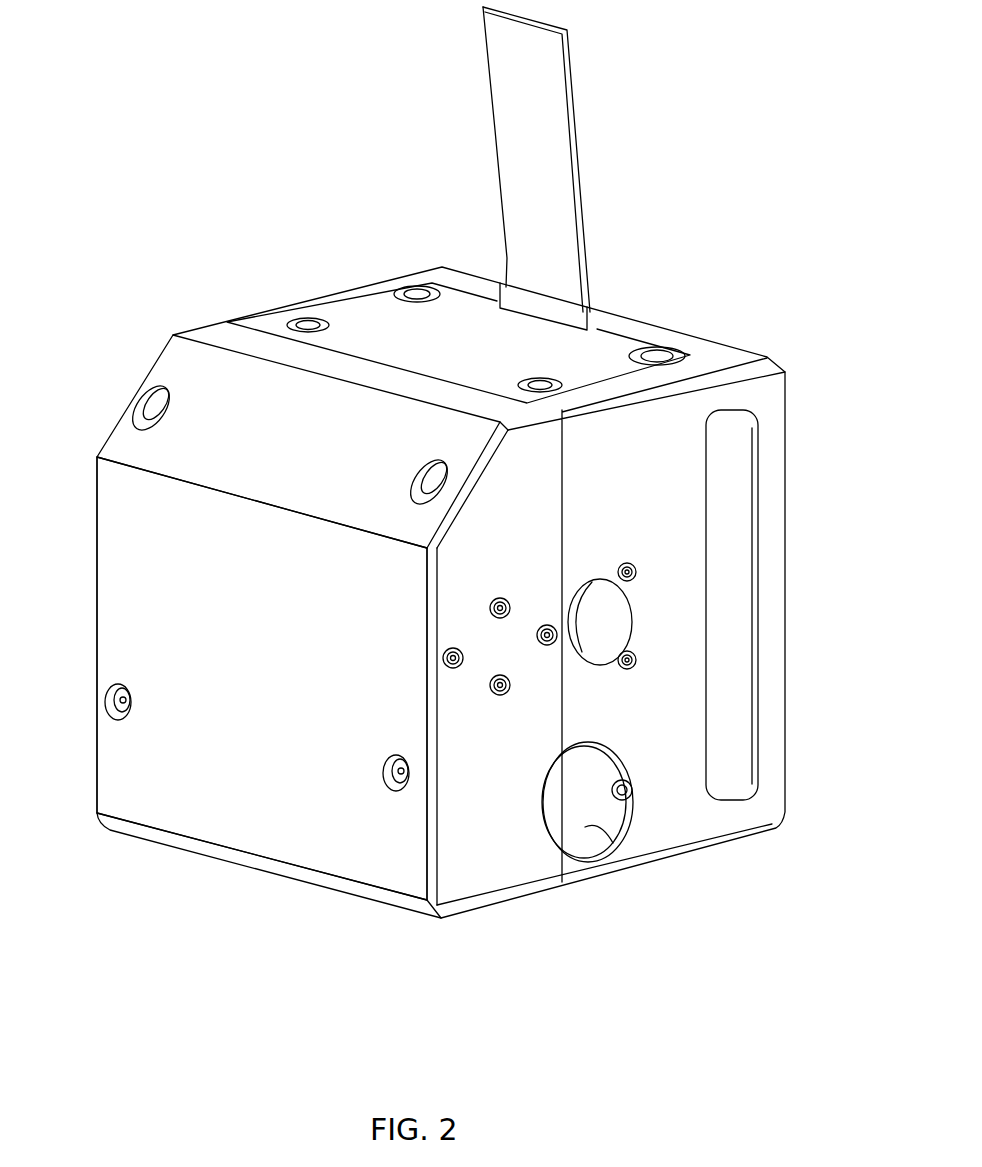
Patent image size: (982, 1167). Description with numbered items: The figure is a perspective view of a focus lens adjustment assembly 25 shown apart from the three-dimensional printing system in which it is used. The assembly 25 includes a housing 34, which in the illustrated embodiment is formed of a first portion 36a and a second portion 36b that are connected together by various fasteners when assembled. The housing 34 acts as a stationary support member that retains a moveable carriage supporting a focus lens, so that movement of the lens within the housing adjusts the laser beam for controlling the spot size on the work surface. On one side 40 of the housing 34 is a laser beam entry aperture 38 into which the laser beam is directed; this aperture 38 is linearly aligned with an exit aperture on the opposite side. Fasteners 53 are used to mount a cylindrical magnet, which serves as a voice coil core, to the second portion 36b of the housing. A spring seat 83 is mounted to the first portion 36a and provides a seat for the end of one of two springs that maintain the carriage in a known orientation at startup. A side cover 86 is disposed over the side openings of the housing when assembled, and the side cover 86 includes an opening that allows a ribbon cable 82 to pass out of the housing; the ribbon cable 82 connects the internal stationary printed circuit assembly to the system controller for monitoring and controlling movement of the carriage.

The focus lens adjustment assembly 25 is at (142, 262).
The housing 34 is at (157, 357).
The first portion 36a is at (738, 345).
The second portion 36b is at (108, 604).
The laser beam entry aperture 38 is at (632, 613).
The side 40 is at (688, 832).
The fasteners 53 is at (537, 634).
The ribbon cable 82 is at (577, 153).
The spring seat 83 is at (612, 840).
The side cover 86 is at (370, 320).